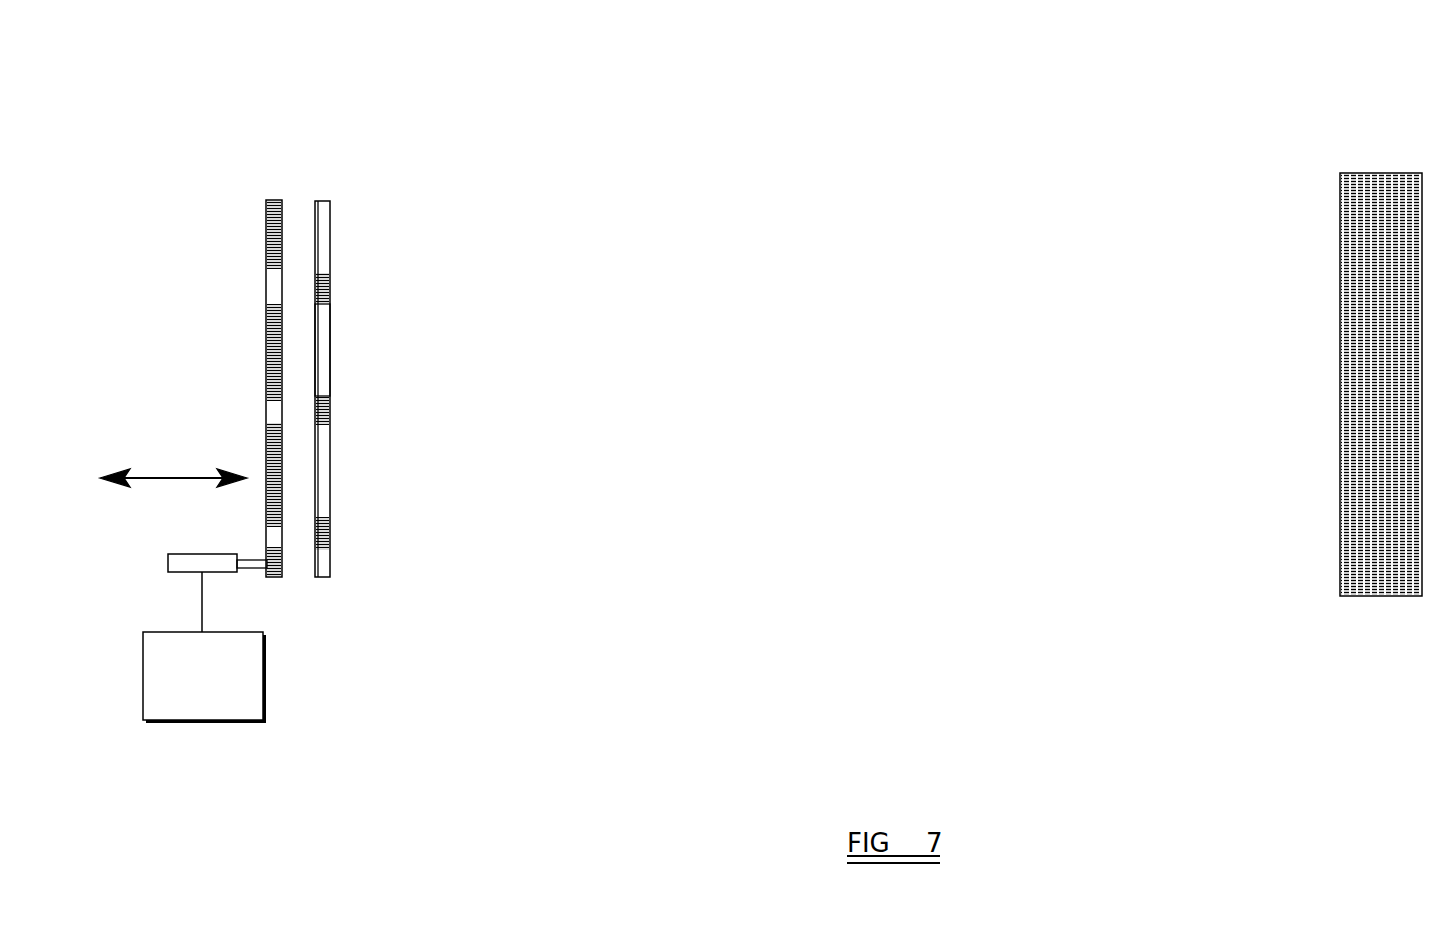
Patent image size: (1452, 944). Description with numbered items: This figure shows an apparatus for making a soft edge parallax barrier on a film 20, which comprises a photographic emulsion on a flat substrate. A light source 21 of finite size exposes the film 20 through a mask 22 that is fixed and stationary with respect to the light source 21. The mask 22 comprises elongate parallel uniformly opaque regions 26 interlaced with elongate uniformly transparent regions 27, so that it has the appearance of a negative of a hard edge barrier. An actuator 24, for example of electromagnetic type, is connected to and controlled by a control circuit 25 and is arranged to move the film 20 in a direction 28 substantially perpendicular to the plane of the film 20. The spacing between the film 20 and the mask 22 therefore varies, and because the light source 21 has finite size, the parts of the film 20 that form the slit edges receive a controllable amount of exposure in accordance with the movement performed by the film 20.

The film 20 is at (277, 198).
The light source 21 is at (1340, 253).
The mask 22 is at (330, 200).
The actuator 24 is at (234, 572).
The control circuit 25 is at (265, 698).
The opaque regions 26 is at (330, 293).
The transparent regions 27 is at (322, 353).
The direction 28 is at (168, 478).